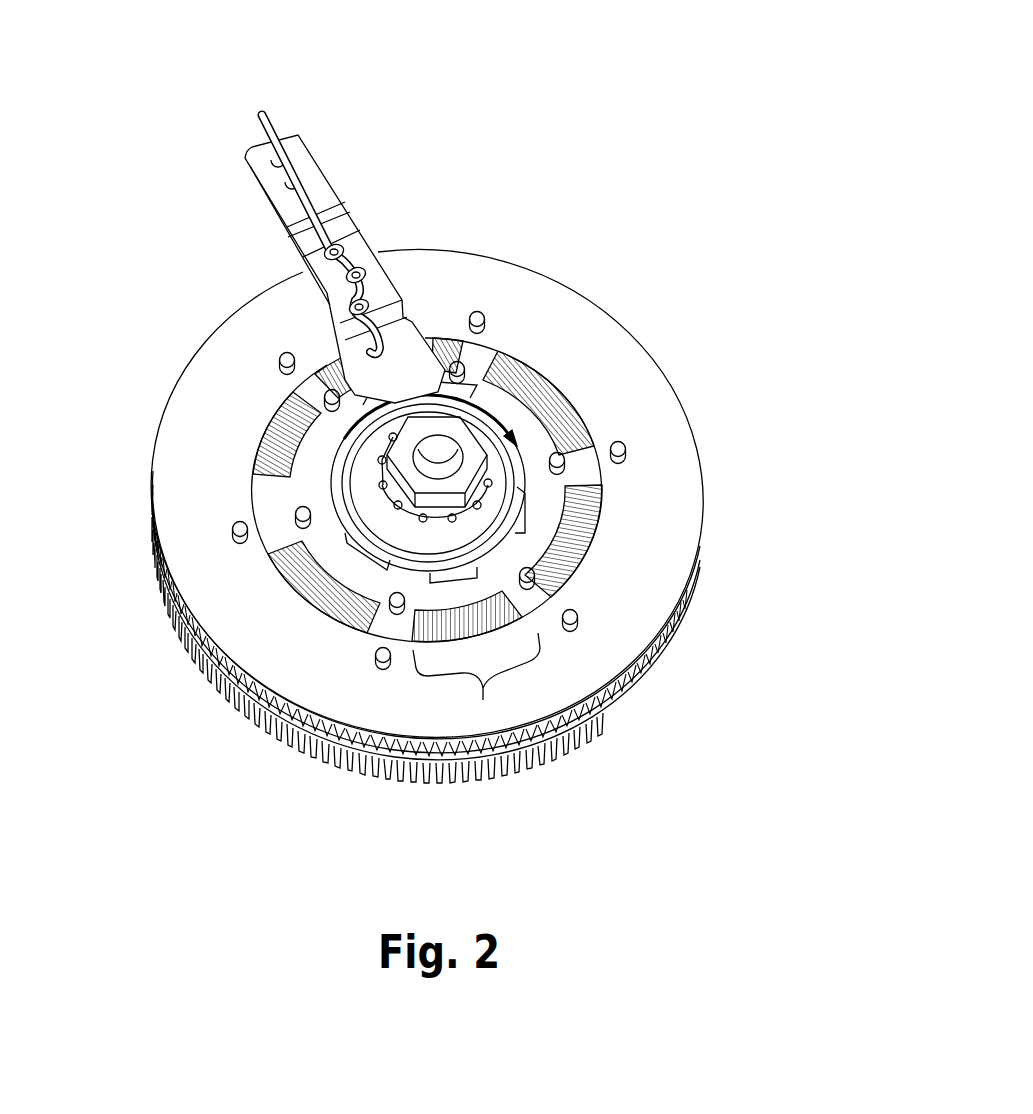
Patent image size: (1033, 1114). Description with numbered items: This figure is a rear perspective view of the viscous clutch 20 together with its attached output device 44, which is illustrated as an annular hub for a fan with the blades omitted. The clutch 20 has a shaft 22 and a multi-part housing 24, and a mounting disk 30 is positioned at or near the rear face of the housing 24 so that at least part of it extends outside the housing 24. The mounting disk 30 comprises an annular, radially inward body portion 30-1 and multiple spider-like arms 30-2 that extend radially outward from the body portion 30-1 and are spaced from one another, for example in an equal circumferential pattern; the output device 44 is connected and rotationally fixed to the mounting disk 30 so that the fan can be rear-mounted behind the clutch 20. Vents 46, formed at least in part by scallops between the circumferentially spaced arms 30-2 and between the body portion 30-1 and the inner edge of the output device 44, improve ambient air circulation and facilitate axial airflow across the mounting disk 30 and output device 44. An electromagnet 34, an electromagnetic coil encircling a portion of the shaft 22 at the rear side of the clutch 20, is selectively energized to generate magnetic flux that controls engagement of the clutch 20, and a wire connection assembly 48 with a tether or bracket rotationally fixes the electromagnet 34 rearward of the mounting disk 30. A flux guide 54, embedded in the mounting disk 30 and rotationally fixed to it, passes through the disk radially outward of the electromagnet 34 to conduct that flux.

The viscous clutch 20 is at (720, 165).
The shaft 22 is at (402, 453).
The housing 24 is at (367, 753).
The mounting disk 30 is at (512, 443).
The body portion 30-1 is at (488, 437).
The arms 30-2 is at (577, 468).
The electromagnet 34 is at (492, 507).
The output device 44 is at (655, 525).
The vents 46 is at (483, 690).
The wire connection assembly 48 is at (308, 203).
The flux guide 54 is at (520, 503).